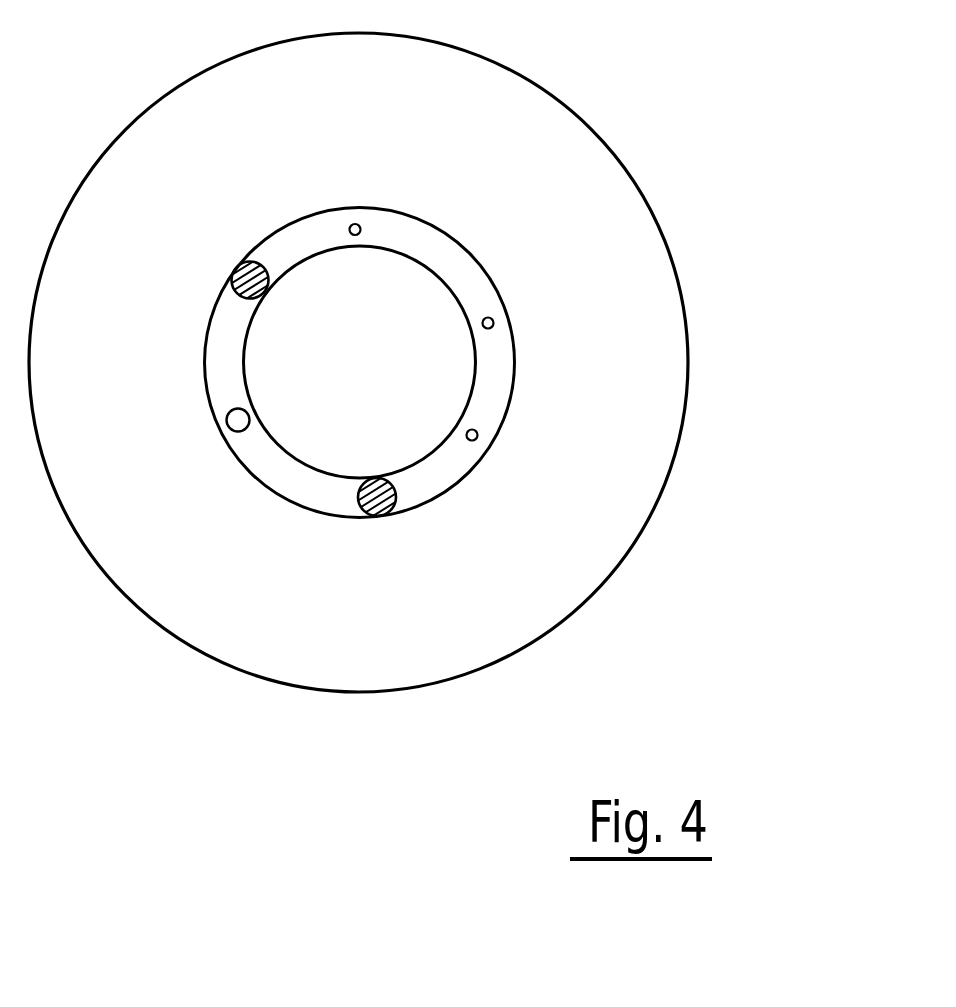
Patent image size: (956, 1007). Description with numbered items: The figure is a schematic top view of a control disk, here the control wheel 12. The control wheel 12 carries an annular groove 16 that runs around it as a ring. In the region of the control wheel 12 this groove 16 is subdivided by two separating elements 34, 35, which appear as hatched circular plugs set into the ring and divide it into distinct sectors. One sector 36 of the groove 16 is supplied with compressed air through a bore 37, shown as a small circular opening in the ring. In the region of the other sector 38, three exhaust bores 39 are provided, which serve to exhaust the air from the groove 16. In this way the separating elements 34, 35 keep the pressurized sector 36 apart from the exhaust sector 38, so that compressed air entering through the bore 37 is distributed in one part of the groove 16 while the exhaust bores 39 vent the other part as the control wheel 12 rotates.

The control wheel 12 is at (593, 133).
The groove 16 is at (443, 232).
The separating element 34 is at (237, 270).
The separating element 35 is at (382, 510).
The sector 36 is at (218, 337).
The bore 37 is at (232, 423).
The sector 38 is at (503, 379).
The exhaust bores 39 is at (357, 224).